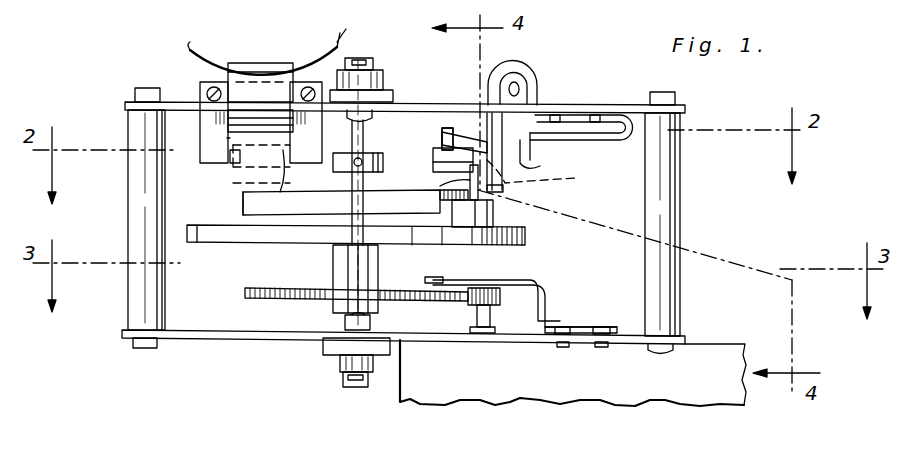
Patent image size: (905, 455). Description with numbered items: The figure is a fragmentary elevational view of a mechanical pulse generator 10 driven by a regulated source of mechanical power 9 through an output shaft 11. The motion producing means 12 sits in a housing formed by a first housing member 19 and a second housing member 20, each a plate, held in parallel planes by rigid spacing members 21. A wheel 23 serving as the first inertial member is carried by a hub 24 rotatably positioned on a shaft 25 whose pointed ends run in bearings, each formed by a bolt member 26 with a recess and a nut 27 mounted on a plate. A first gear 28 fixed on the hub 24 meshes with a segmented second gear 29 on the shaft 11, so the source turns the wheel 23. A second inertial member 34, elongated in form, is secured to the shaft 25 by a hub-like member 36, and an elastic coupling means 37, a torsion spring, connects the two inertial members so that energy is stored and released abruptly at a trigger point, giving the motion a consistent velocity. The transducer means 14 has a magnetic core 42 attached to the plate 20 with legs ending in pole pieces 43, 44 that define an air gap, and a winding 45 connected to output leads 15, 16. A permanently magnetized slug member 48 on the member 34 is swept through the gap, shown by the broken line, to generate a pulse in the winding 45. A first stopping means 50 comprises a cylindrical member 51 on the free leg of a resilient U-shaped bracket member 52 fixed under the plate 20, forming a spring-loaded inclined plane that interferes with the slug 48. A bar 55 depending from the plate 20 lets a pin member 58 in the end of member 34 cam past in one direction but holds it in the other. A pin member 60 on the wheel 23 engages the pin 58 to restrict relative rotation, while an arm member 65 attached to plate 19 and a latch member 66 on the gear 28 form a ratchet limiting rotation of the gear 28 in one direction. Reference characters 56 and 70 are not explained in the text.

The source of mechanical power 9 is at (567, 394).
The mechanical pulse generator 10 is at (601, 60).
The output shaft 11 is at (480, 318).
The motion producing means 12 is at (553, 195).
The transducer means 14 is at (257, 59).
The output lead 15 is at (190, 44).
The output lead 16 is at (338, 36).
The first housing member 19 is at (197, 340).
The second housing member 20 is at (630, 106).
The rigid spacing members 21 is at (137, 298).
The wheel 23 is at (203, 240).
The hub 24 is at (340, 269).
The shaft 25 is at (366, 128).
The bolt member 26 is at (364, 60).
The nut 27 is at (383, 76).
The first gear 28 is at (257, 300).
The second gear 29 is at (500, 298).
The second inertial member 34 is at (238, 170).
The hub-like member 36 is at (321, 162).
The elastic coupling means 37 is at (238, 211).
The magnetic core 42 is at (203, 125).
The pole piece 43 is at (233, 163).
The pole piece 44 is at (341, 184).
The winding 45 is at (283, 70).
The permanently magnetized slug member 48 is at (227, 138).
The first stopping means 50 is at (465, 124).
The member 51 is at (510, 146).
The resilient bracket member 52 is at (578, 140).
The bar 55 is at (521, 164).
The eyelet 56 is at (527, 84).
The pin member 58 is at (546, 174).
The pin member 60 is at (434, 203).
The arm member 65 is at (527, 284).
The latch member 66 is at (436, 280).
The block 70 is at (487, 215).